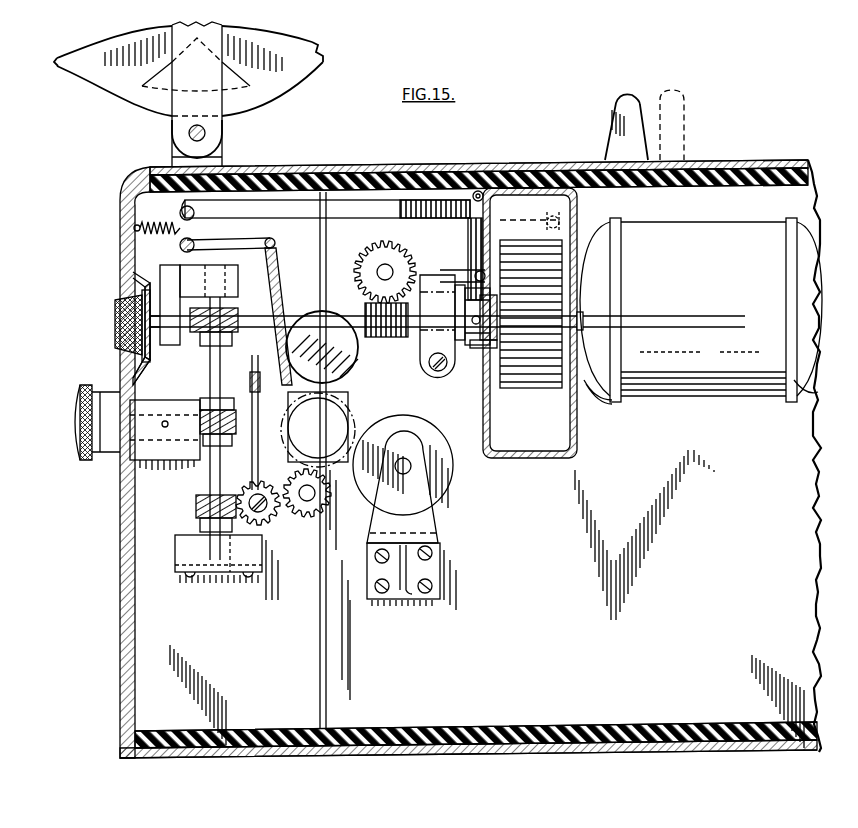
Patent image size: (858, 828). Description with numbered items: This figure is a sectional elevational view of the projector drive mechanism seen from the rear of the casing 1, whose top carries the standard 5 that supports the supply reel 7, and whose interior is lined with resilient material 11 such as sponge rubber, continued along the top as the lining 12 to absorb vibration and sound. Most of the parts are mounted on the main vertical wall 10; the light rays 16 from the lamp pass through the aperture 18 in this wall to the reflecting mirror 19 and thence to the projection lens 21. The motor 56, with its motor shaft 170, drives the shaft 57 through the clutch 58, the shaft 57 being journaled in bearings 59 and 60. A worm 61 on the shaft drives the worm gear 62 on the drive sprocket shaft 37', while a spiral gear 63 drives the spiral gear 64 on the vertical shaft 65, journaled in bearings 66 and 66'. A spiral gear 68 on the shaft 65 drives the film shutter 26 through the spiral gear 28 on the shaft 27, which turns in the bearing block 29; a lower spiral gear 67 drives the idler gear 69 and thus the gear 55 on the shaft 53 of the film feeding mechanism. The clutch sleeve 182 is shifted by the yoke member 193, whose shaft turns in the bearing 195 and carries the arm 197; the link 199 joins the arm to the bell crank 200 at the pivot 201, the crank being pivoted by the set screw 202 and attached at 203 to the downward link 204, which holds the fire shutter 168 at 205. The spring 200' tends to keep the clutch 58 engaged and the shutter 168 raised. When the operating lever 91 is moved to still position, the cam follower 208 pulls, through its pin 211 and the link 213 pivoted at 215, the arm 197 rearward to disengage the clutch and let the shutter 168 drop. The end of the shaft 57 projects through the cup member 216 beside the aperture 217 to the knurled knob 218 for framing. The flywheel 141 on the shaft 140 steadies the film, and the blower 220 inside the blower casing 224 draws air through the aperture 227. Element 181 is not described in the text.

The casing 1 is at (115, 581).
The standard 5 is at (180, 126).
The supply reel 7 is at (112, 95).
The main vertical wall 10 is at (501, 575).
The layer of resilient material 11 is at (468, 726).
The resilient lining 12 is at (765, 168).
The light rays 16 is at (112, 200).
The aperture 18 is at (462, 154).
The reflecting mirror 19 is at (426, 312).
The projection lens 21 is at (110, 460).
The film shutter 26 is at (258, 448).
The shaft 27 is at (236, 408).
The spiral gear 28 is at (200, 456).
The bearing block 29 is at (165, 429).
The drive sprocket shaft 37' is at (375, 252).
The shaft 53 is at (312, 492).
The gear 55 is at (306, 512).
The motor 56 is at (701, 311).
The shaft 57 is at (345, 313).
The clutch 58 is at (477, 345).
The bearing 59 is at (169, 313).
The bearing 60 is at (437, 326).
The worm 61 is at (394, 334).
The worm gear 62 is at (400, 262).
The spiral gear 63 is at (236, 318).
The spiral gear 64 is at (232, 338).
The vertical shaft 65 is at (246, 377).
The bearing 66 is at (209, 281).
The bearing 66' is at (226, 567).
The spiral gear 67 is at (196, 506).
The spiral gear 68 is at (236, 434).
The idler gear 69 is at (268, 518).
The operating lever 91 is at (622, 104).
The shaft 140 is at (408, 472).
The flywheel 141 is at (450, 470).
The fire shutter 168 is at (342, 372).
The motor shaft 170 is at (578, 318).
The arm 181 is at (456, 277).
The sleeve 182 is at (490, 316).
The yoke member 193 is at (484, 306).
The bearing 195 is at (457, 286).
The arm 197 is at (470, 250).
The link 199 is at (352, 198).
The bell crank 200 is at (157, 236).
The spring 200' is at (159, 219).
The pivot connection 201 is at (180, 213).
The set screw 202 is at (180, 248).
The pivot connection 203 is at (276, 243).
The link 204 is at (282, 286).
The attachment point 205 is at (350, 410).
The cam follower 208 is at (531, 304).
The pin 211 is at (562, 208).
The link 213 is at (530, 186).
The pivot connection 215 is at (476, 198).
The cup member 216 is at (133, 285).
The aperture 217 is at (128, 374).
The knurled knob 218 is at (118, 320).
The blower 220 is at (560, 385).
The blower casing 224 is at (562, 455).
The aperture 227 is at (486, 348).